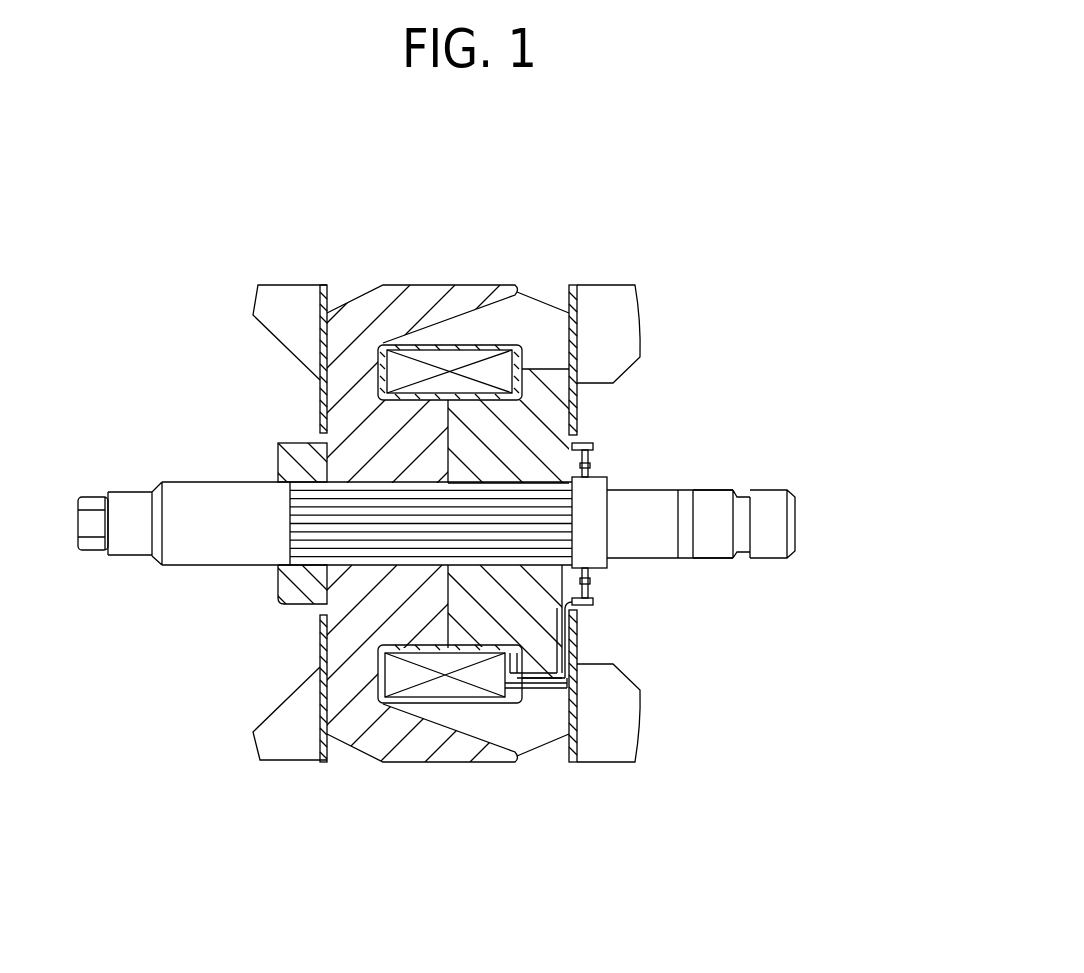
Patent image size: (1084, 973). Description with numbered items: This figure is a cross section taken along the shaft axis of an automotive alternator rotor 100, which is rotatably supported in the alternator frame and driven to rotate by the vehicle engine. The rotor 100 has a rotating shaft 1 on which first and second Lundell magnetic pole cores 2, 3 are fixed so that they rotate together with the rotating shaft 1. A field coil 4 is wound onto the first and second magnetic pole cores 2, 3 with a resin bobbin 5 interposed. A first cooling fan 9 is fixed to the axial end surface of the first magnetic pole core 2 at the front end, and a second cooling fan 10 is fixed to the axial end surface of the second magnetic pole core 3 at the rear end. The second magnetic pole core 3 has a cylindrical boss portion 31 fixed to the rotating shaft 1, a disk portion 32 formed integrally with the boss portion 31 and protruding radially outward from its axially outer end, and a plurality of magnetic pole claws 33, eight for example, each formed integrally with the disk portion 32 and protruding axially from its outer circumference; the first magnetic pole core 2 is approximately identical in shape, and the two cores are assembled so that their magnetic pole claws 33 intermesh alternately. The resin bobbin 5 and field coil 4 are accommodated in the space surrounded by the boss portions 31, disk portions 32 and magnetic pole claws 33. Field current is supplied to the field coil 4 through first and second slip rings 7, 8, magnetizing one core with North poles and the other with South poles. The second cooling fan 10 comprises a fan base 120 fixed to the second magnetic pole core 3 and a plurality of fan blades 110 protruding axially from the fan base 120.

The rotor 100 is at (639, 183).
The rotating shaft 1 is at (213, 500).
The first Lundell magnetic pole core 2 is at (362, 286).
The second Lundell magnetic pole core 3 is at (518, 285).
The field coil 4 is at (450, 358).
The resin bobbin 5 is at (377, 692).
The first slip ring 7 is at (712, 490).
The second slip ring 8 is at (775, 490).
The first cooling fan 9 is at (294, 275).
The second cooling fan 10 is at (616, 275).
The boss portion 31 is at (507, 462).
The disk portion 32 is at (577, 398).
The magnetic pole claws 33 is at (540, 315).
The fan blades 110 is at (640, 713).
The fan base 120 is at (578, 622).